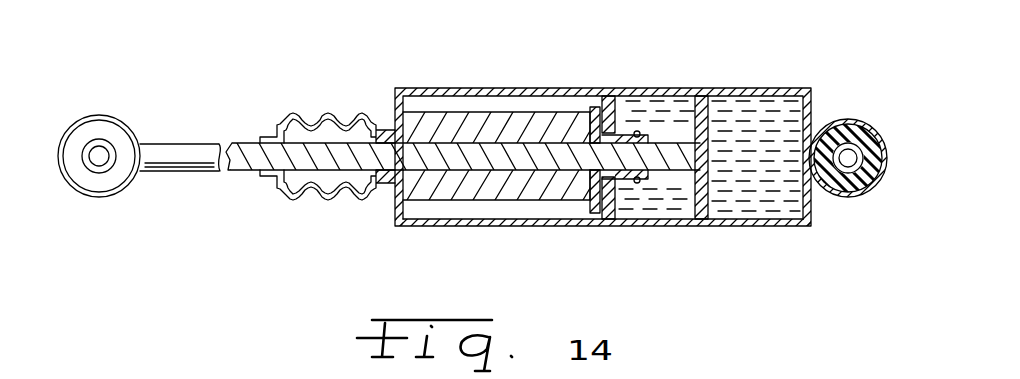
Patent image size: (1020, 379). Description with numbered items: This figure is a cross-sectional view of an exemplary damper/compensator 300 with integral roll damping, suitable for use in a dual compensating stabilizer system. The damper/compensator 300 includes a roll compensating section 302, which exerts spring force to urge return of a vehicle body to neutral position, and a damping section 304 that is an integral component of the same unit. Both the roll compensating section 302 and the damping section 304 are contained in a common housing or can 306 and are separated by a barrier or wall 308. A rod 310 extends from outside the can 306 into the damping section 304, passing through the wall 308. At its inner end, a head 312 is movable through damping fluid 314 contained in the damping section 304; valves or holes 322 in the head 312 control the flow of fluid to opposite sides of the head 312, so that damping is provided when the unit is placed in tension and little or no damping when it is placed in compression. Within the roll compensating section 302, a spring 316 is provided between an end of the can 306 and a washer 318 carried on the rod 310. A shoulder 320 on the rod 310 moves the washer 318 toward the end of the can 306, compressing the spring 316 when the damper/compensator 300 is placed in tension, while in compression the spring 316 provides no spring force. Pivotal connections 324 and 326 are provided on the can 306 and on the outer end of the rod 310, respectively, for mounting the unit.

The damper/compensator 300 is at (266, 94).
The roll compensating section 302 is at (493, 70).
The damping section 304 is at (687, 68).
The housing or can 306 is at (785, 226).
The barrier or wall 308 is at (612, 198).
The rod 310 is at (177, 158).
The head 312 is at (692, 213).
The damping fluid 314 is at (750, 193).
The spring 316 is at (423, 188).
The washer 318 is at (593, 207).
The shoulder 320 is at (625, 105).
The valves or holes 322 is at (710, 193).
The pivotal connection 324 is at (850, 163).
The pivotal connection 326 is at (100, 160).